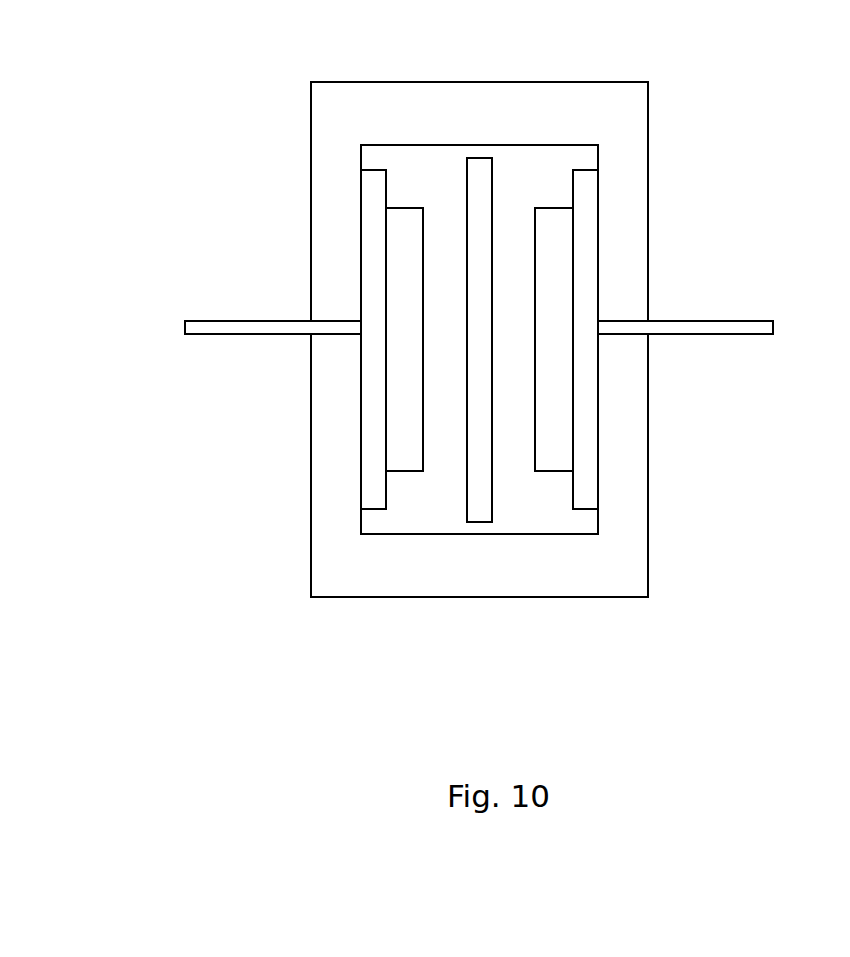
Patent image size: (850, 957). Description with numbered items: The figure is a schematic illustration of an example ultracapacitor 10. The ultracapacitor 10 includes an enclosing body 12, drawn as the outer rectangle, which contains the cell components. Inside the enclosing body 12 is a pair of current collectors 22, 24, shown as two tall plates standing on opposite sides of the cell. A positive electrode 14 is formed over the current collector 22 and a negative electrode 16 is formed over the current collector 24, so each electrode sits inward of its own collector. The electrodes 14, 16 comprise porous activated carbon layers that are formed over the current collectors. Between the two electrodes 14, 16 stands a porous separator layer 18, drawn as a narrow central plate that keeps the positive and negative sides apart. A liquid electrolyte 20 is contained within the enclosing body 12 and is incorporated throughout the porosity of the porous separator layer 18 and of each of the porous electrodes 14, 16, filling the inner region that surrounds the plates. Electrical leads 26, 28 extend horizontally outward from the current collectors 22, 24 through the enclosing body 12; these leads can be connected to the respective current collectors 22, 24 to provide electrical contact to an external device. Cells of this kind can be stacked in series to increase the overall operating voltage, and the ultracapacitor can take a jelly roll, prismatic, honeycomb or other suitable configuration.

The ultracapacitor 10 is at (225, 90).
The enclosing body 12 is at (611, 571).
The positive electrode 14 is at (411, 458).
The negative electrode 16 is at (555, 458).
The porous separator layer 18 is at (477, 168).
The liquid electrolyte 20 is at (554, 193).
The current collector 22 is at (373, 233).
The current collector 24 is at (582, 237).
The electrical lead 26 is at (222, 327).
The electrical lead 28 is at (742, 330).